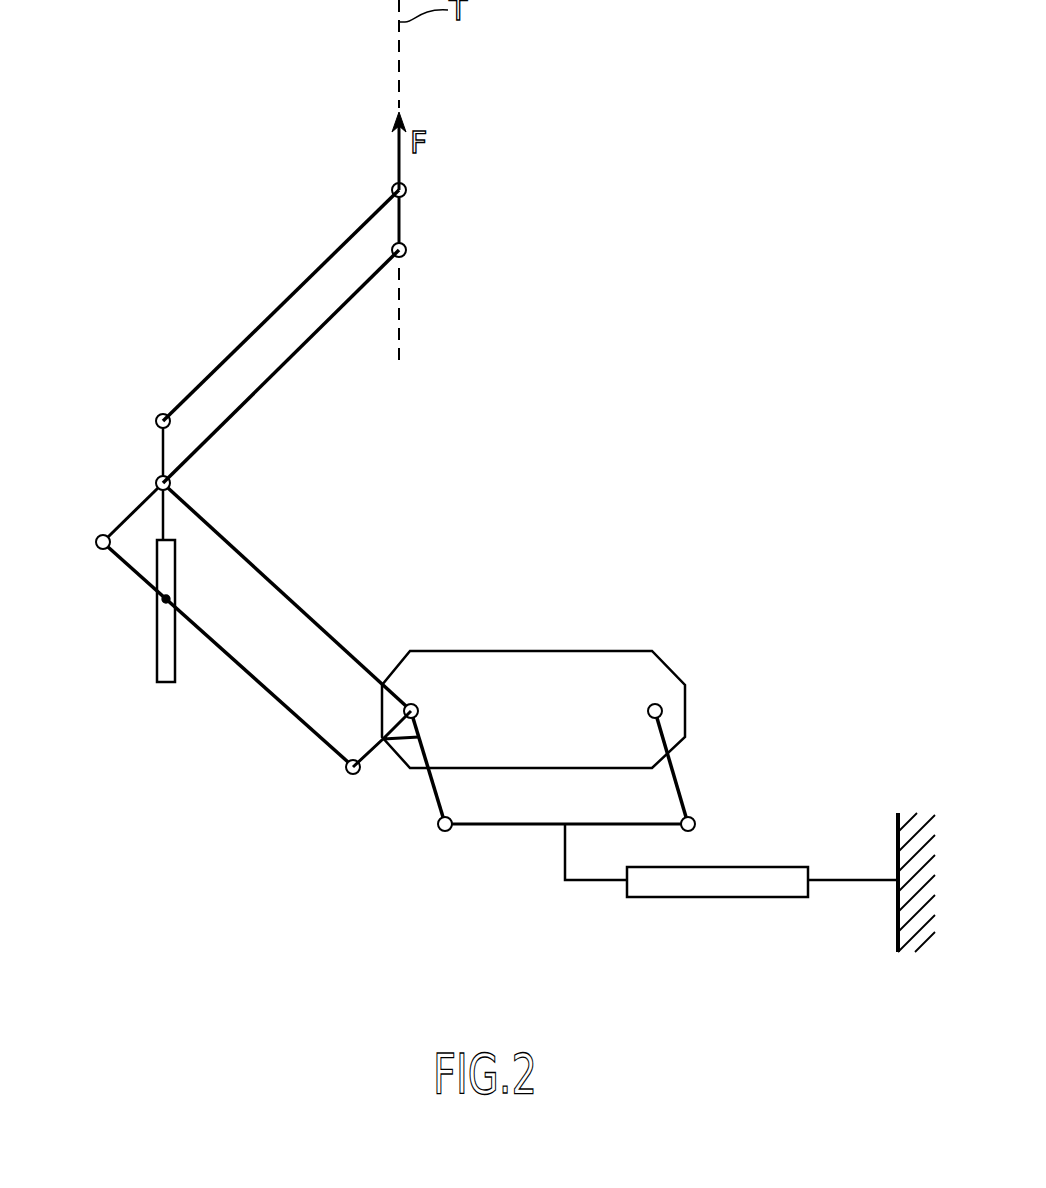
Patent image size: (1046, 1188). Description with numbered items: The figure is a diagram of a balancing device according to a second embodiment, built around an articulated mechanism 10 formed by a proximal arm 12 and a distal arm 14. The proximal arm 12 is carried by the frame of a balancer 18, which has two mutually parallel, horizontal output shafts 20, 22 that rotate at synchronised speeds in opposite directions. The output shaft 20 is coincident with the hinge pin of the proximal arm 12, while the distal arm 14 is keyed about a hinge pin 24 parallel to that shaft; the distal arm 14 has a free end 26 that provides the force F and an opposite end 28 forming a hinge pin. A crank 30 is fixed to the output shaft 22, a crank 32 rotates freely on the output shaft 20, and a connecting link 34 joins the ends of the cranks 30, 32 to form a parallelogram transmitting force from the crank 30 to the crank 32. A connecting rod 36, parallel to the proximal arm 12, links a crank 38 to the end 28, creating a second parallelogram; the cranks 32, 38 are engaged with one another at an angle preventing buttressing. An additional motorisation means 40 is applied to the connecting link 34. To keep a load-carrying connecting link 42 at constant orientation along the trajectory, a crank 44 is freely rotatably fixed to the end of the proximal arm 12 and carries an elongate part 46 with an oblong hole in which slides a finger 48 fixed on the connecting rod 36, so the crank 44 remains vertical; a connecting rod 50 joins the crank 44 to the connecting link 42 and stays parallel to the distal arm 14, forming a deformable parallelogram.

The articulated mechanism 10 is at (270, 506).
The proximal arm 12 is at (283, 591).
The distal arm 14 is at (288, 364).
The balancer 18 is at (494, 769).
The output shaft 20 is at (416, 703).
The output shaft 22 is at (650, 706).
The hinge pin 24 is at (172, 483).
The free end 26 is at (407, 252).
The end 28 is at (97, 548).
The crank 30 is at (680, 778).
The crank 32 is at (435, 795).
The connecting link 34 is at (520, 828).
The connecting rod 36 is at (246, 682).
The crank 38 is at (378, 752).
The motorisation means 40 is at (710, 898).
The connecting link 42 is at (404, 220).
The crank 44 is at (162, 450).
The elongate part 46 is at (156, 656).
The finger 48 is at (158, 601).
The connecting rod 50 is at (282, 299).